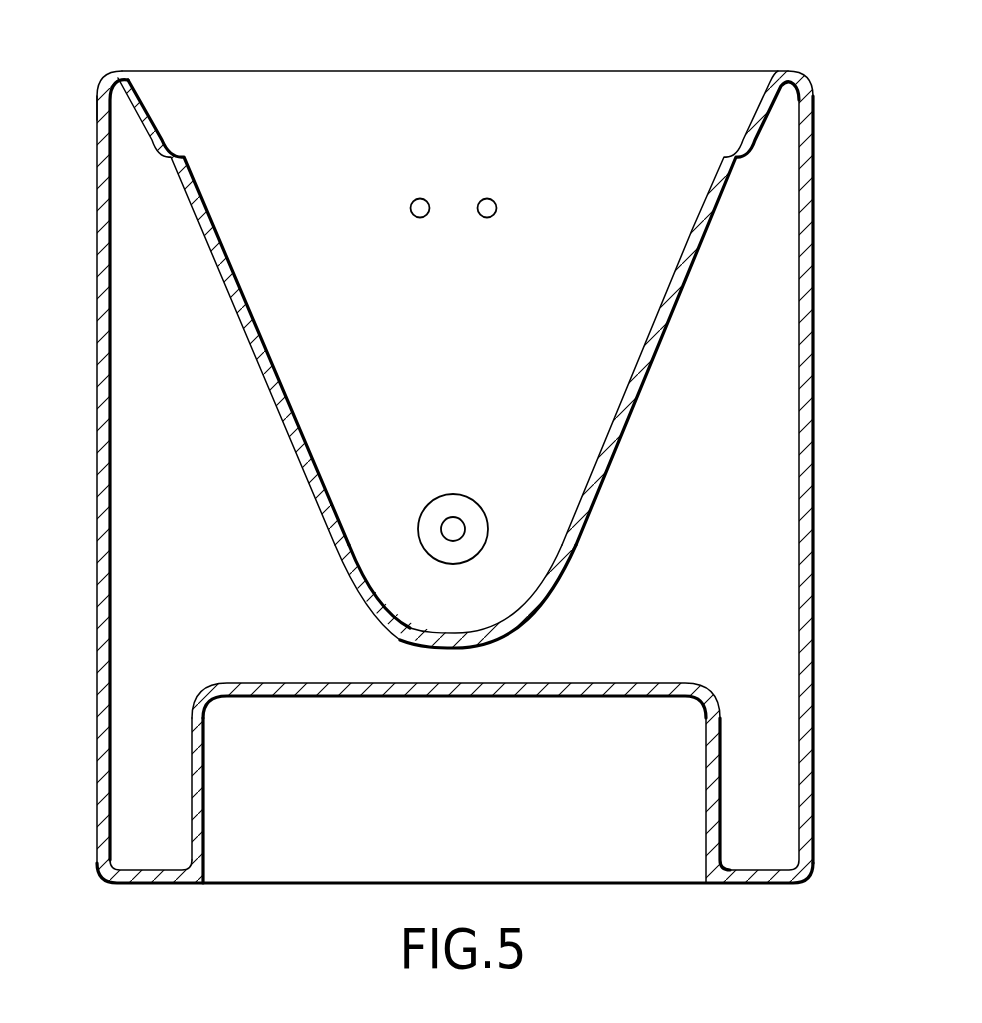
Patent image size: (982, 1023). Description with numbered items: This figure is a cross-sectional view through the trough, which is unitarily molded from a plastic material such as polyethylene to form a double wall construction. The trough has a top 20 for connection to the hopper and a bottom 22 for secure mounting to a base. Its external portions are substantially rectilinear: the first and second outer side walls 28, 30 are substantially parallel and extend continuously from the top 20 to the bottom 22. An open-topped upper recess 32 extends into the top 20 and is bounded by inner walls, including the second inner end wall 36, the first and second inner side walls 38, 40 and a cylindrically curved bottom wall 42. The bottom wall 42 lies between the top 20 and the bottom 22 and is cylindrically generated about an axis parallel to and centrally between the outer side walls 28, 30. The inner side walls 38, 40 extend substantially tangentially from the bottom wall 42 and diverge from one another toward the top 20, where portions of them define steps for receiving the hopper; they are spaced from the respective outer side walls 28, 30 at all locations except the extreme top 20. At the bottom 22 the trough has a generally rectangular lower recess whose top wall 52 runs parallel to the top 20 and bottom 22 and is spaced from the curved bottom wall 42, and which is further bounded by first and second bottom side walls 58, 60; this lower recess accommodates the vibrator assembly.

The top 20 is at (788, 73).
The bottom 22 is at (745, 880).
The first outer side wall 28 is at (97, 332).
The second outer side wall 30 is at (812, 392).
The open-topped upper recess 32 is at (420, 387).
The second inner end wall 36 is at (375, 82).
The first inner side wall 38 is at (252, 312).
The second inner side wall 40 is at (660, 312).
The bottom wall 42 is at (537, 610).
The top wall 52 is at (495, 700).
The first bottom side wall 58 is at (204, 800).
The second bottom side wall 60 is at (705, 780).